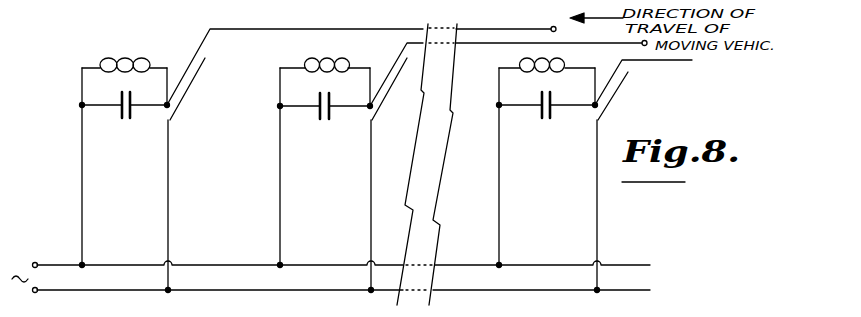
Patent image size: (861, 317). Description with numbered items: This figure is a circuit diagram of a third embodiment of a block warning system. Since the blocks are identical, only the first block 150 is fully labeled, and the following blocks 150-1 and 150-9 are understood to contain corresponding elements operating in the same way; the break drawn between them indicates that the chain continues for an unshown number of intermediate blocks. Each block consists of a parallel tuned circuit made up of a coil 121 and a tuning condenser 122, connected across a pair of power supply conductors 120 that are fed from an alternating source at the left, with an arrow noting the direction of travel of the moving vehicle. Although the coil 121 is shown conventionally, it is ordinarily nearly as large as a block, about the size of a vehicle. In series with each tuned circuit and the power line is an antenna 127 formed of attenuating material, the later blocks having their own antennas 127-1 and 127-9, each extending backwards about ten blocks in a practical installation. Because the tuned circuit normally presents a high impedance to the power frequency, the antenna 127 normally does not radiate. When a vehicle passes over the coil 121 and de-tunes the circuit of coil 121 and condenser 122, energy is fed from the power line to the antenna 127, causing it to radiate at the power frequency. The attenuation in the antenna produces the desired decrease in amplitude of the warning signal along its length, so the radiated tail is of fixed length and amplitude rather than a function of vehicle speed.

The power supply bus conductors 120 is at (233, 266).
The coil 121 is at (142, 50).
The tuning condenser 122 is at (122, 113).
The antenna 127 is at (288, 32).
The contact conductor 127-1 is at (522, 44).
The contact conductor 127-9 is at (647, 61).
The resonant circuit unit 150 is at (125, 162).
The resonant circuit unit 150-1 is at (352, 193).
The resonant circuit unit 150-9 is at (570, 195).